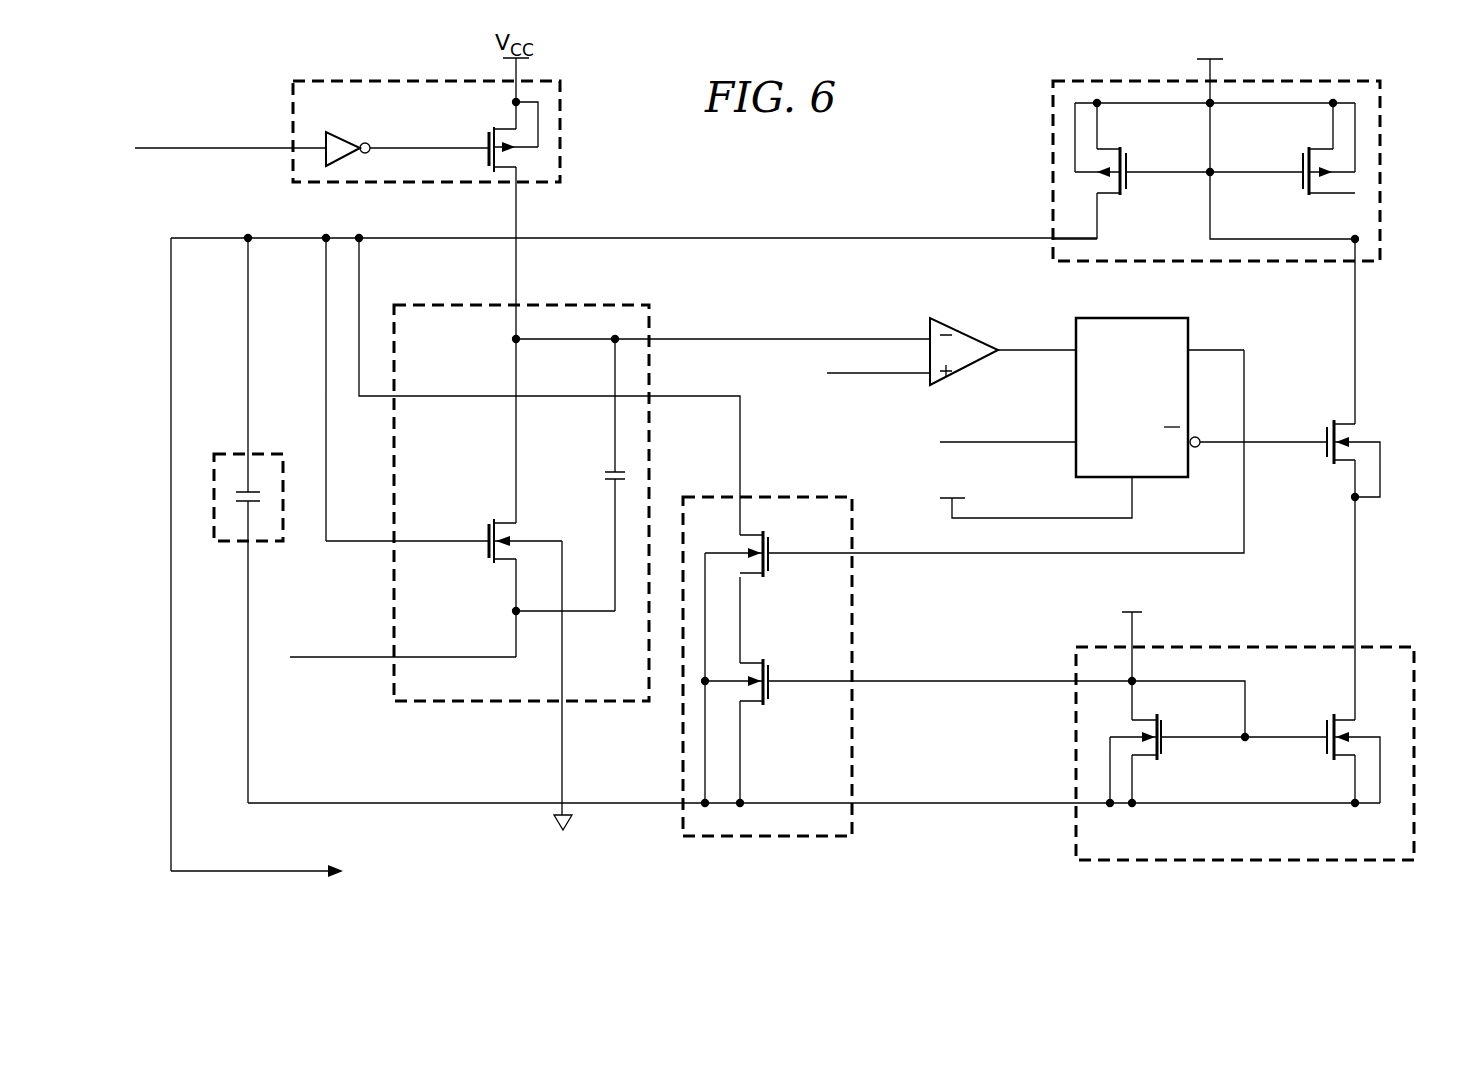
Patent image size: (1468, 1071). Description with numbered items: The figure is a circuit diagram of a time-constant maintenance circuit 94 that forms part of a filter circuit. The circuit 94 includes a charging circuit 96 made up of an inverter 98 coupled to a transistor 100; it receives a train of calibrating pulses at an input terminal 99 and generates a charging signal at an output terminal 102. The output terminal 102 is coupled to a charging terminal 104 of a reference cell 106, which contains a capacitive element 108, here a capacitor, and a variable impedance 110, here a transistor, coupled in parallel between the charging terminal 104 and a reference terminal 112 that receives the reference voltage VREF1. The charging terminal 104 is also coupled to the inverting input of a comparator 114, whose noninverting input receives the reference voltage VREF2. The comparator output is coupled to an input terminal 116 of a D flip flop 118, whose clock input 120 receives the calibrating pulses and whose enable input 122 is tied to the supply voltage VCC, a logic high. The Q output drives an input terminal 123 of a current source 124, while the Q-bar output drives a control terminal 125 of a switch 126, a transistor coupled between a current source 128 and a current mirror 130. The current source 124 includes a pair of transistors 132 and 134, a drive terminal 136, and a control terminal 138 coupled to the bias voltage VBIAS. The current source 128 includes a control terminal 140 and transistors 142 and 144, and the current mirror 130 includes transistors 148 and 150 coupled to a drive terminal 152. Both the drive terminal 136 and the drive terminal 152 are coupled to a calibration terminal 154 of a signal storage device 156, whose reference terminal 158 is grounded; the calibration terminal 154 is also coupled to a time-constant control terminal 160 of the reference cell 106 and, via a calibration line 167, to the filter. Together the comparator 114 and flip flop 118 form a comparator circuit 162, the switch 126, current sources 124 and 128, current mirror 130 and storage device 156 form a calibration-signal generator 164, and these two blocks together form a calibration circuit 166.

The time-constant maintenance circuit 94 is at (860, 882).
The charging circuit 96 is at (562, 126).
The inverter 98 is at (342, 132).
The input terminal 99 is at (293, 143).
The transistor 100 is at (487, 145).
The output terminal 102 is at (518, 185).
The charging terminal 104 is at (517, 300).
The reference cell 106 is at (627, 674).
The capacitive element 108 is at (606, 477).
The variable impedance 110 is at (487, 552).
The reference terminal 112 is at (394, 660).
The comparator 114 is at (952, 322).
The input terminal 116 is at (1070, 346).
The D flip flop 118 is at (1152, 401).
The clock input 120 is at (1070, 448).
The enable input 122 is at (1134, 488).
The input terminal 123 is at (854, 553).
The current source 124 is at (817, 782).
The control terminal 125 is at (1322, 449).
The switch 126 is at (1315, 385).
The current source 128 is at (1267, 844).
The current mirror 130 is at (1385, 66).
The transistor 132 is at (771, 572).
The transistor 134 is at (771, 697).
The drive terminal 136 is at (742, 496).
The control terminal 138 is at (854, 682).
The control terminal 140 is at (1130, 645).
The transistor 142 is at (1163, 752).
The transistor 144 is at (1322, 725).
The transistor 148 is at (1300, 180).
The transistor 150 is at (1130, 165).
The drive terminal 152 is at (1050, 236).
The calibration terminal 154 is at (246, 236).
The signal storage device 156 is at (237, 543).
The reference terminal 158 is at (253, 542).
The time-constant control terminal 160 is at (394, 538).
The comparator circuit 162 is at (898, 300).
The calibration-signal generator 164 is at (1396, 880).
The calibration circuit 166 is at (928, 160).
The calibration line 167 is at (280, 875).